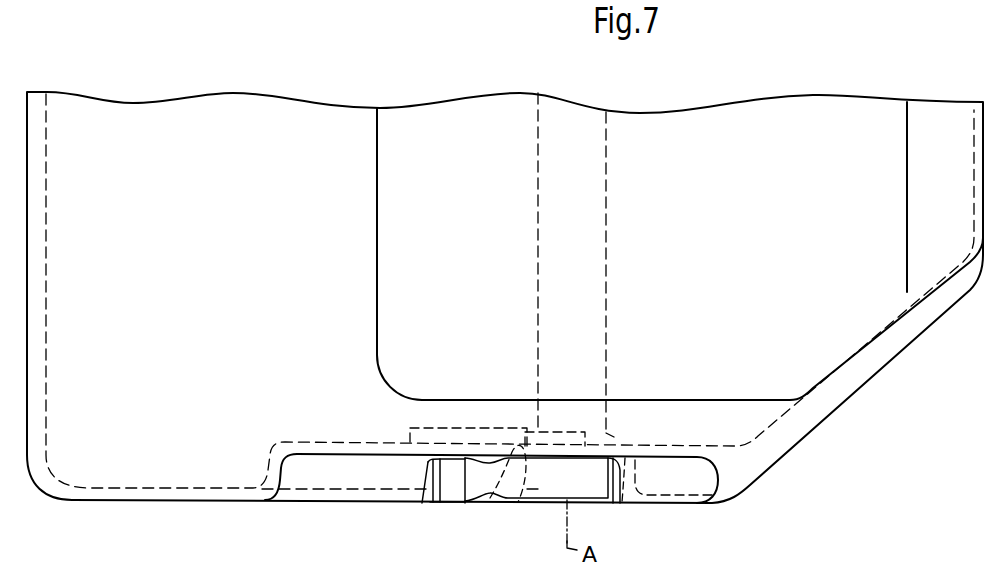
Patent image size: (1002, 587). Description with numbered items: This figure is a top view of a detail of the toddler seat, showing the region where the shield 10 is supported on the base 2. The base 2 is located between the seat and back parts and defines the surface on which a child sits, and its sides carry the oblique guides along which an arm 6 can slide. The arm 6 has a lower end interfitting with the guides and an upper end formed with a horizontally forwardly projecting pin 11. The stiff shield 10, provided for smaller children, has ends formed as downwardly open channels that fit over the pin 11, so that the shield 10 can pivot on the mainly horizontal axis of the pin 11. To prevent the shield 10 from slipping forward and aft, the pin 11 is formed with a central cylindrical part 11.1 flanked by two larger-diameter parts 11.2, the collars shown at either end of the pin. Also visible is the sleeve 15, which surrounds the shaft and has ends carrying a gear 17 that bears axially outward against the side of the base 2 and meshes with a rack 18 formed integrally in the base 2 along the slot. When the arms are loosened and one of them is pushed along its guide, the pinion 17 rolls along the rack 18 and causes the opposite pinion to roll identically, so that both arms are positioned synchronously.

The base 2 is at (285, 286).
The shield 10 is at (713, 291).
The sleeve 15 is at (607, 176).
The gear 17 is at (615, 438).
The rack 18 is at (445, 432).
The arm 6 is at (672, 503).
The pin 11 is at (509, 500).
The central cylindrical part 11.1 is at (560, 489).
The larger-diameter part 11.2 is at (424, 500).